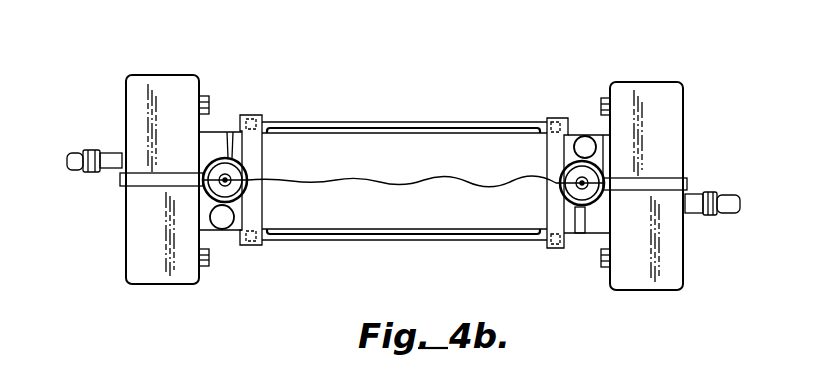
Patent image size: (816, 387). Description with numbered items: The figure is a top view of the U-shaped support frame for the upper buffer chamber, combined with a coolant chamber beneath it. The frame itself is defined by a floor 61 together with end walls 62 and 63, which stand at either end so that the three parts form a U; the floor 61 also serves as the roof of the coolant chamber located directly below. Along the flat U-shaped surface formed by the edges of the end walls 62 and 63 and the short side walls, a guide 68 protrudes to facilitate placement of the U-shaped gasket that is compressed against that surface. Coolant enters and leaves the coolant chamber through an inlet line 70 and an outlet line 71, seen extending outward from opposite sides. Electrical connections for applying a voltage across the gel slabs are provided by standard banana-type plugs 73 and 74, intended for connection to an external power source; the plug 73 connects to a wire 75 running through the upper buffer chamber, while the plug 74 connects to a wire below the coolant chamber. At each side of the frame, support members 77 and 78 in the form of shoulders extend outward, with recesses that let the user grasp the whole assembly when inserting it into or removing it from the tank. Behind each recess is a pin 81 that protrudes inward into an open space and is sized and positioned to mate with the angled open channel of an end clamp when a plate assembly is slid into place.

The floor 61 is at (404, 170).
The end wall 62 is at (263, 148).
The end wall 63 is at (543, 150).
The guide 68 is at (441, 243).
The inlet line 70 is at (83, 150).
The outlet line 71 is at (722, 195).
The banana-type plug 73 is at (222, 176).
The banana-type plug 74 is at (590, 170).
The wire 75 is at (449, 178).
The support member 77 is at (126, 236).
The support member 78 is at (683, 247).
The pin 81 is at (601, 259).